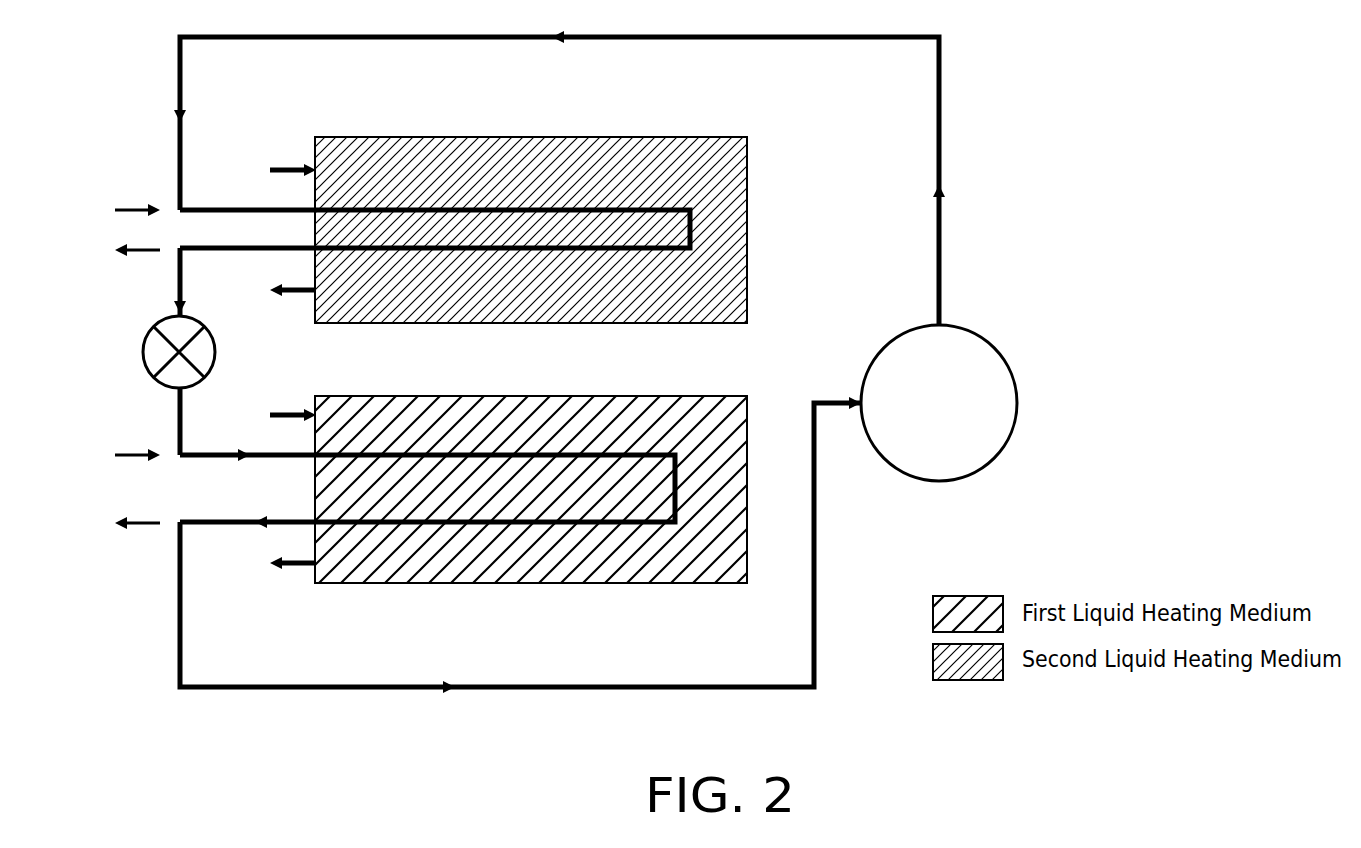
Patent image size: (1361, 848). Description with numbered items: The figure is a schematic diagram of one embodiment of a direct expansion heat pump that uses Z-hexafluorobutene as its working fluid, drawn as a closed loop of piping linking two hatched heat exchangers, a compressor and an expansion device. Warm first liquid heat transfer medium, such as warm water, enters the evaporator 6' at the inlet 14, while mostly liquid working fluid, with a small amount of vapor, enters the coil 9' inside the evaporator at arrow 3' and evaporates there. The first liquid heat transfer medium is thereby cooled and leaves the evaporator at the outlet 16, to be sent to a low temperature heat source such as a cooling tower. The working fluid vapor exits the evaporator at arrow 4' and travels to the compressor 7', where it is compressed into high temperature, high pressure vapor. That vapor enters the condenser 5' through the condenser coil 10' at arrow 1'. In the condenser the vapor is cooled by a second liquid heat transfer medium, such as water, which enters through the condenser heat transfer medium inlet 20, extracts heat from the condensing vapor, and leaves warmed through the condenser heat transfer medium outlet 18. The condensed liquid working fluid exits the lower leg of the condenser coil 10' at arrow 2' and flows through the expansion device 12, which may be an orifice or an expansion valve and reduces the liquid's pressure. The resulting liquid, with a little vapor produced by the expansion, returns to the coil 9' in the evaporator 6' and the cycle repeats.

The condenser coil inlet arrow 1' is at (122, 210).
The condenser coil outlet arrow 2' is at (122, 250).
The evaporator coil inlet arrow 3' is at (122, 457).
The evaporator coil outlet arrow 4' is at (122, 524).
The condenser 5' is at (531, 212).
The evaporator 6' is at (531, 508).
The compressor 7' is at (924, 402).
The coil 9' is at (427, 488).
The condenser coil 10' is at (435, 229).
The expansion device 12 is at (144, 351).
The inlet 14 is at (287, 410).
The outlet 16 is at (287, 572).
The condenser heat transfer medium outlet 18 is at (287, 300).
The condenser heat transfer medium inlet 20 is at (293, 165).